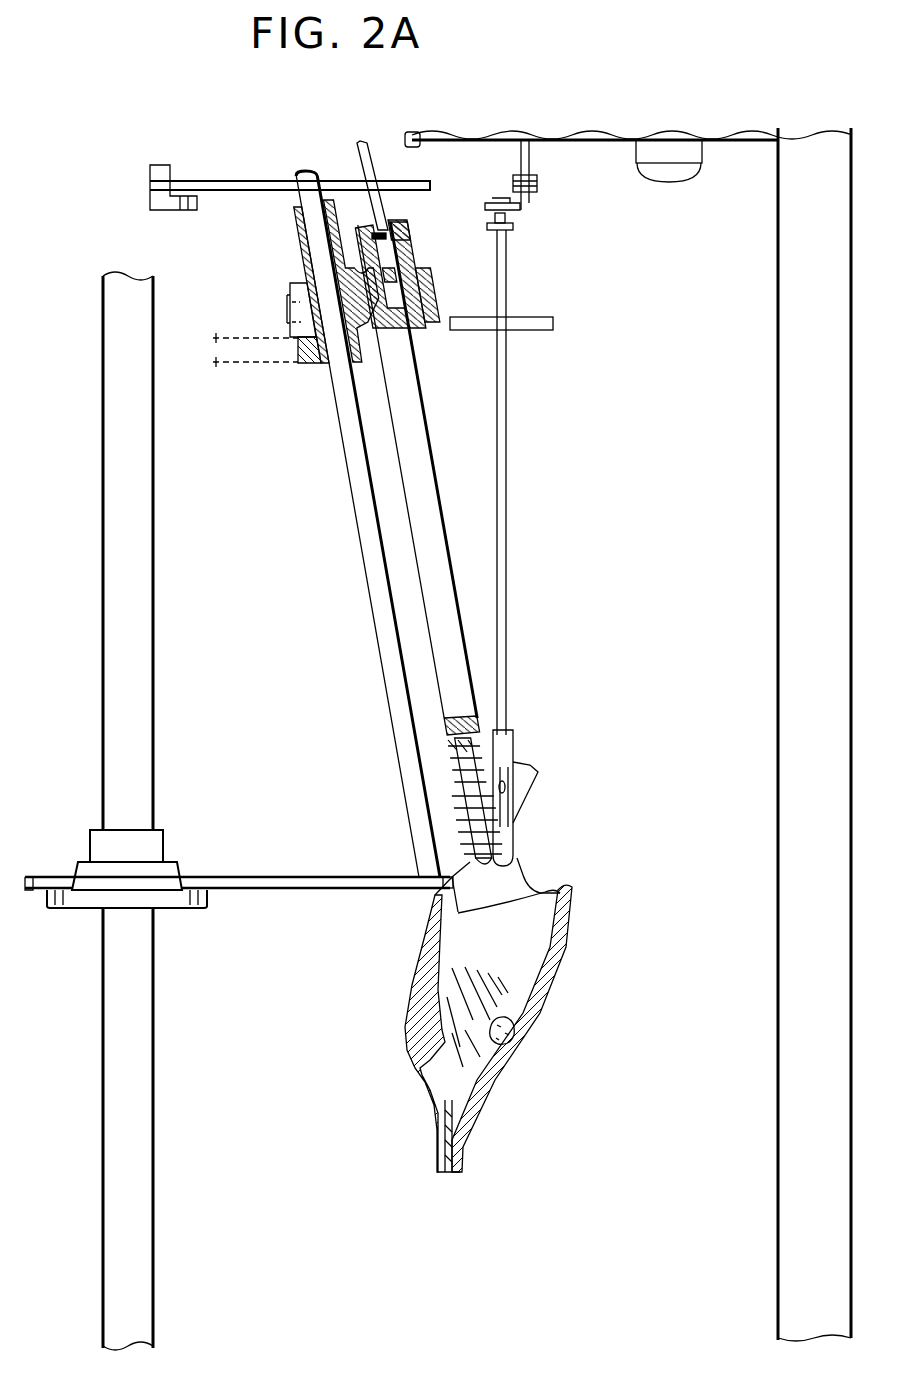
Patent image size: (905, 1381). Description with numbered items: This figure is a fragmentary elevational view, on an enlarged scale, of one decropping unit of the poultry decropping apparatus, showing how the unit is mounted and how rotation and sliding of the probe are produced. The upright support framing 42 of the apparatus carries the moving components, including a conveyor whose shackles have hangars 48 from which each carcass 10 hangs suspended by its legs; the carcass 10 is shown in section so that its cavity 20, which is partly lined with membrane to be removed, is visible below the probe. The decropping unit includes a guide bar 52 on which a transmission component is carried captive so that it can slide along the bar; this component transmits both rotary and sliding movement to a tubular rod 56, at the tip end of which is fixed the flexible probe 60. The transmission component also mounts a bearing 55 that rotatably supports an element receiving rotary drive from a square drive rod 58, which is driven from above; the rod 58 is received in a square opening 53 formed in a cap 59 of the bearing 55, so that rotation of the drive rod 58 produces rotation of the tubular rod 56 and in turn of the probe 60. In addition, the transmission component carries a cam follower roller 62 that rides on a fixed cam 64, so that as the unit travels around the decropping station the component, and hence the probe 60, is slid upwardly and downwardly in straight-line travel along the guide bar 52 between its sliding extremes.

The carcass 10 is at (565, 1022).
The cavity 20 is at (495, 961).
The upright support framing 42 is at (808, 783).
The hangar 48 is at (507, 557).
The guide bar 52 is at (375, 567).
The square opening 53 is at (395, 242).
The bearing 55 is at (420, 290).
The tubular rod 56 is at (433, 462).
The square drive rod 58 is at (375, 163).
The cap 59 is at (397, 218).
The flexible probe 60 is at (455, 793).
The cam follower roller 62 is at (290, 293).
The fixed cam 64 is at (312, 366).